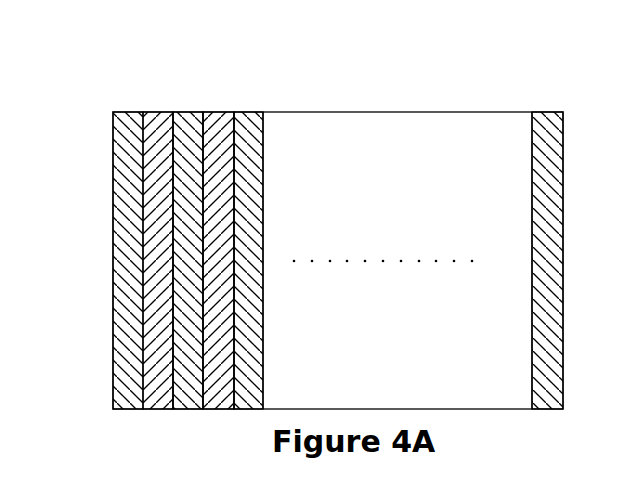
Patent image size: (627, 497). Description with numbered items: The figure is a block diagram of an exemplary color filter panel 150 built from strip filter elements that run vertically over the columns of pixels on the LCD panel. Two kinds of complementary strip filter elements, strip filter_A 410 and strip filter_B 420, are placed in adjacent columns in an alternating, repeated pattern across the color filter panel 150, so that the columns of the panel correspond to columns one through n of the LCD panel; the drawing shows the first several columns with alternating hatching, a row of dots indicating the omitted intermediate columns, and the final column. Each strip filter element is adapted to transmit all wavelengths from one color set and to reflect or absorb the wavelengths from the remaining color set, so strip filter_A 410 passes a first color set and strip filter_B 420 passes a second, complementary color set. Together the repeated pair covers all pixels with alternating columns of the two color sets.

The color filter panel 150 is at (113, 45).
The strip filter_A 410 is at (118, 112).
The strip filter_B 420 is at (158, 111).